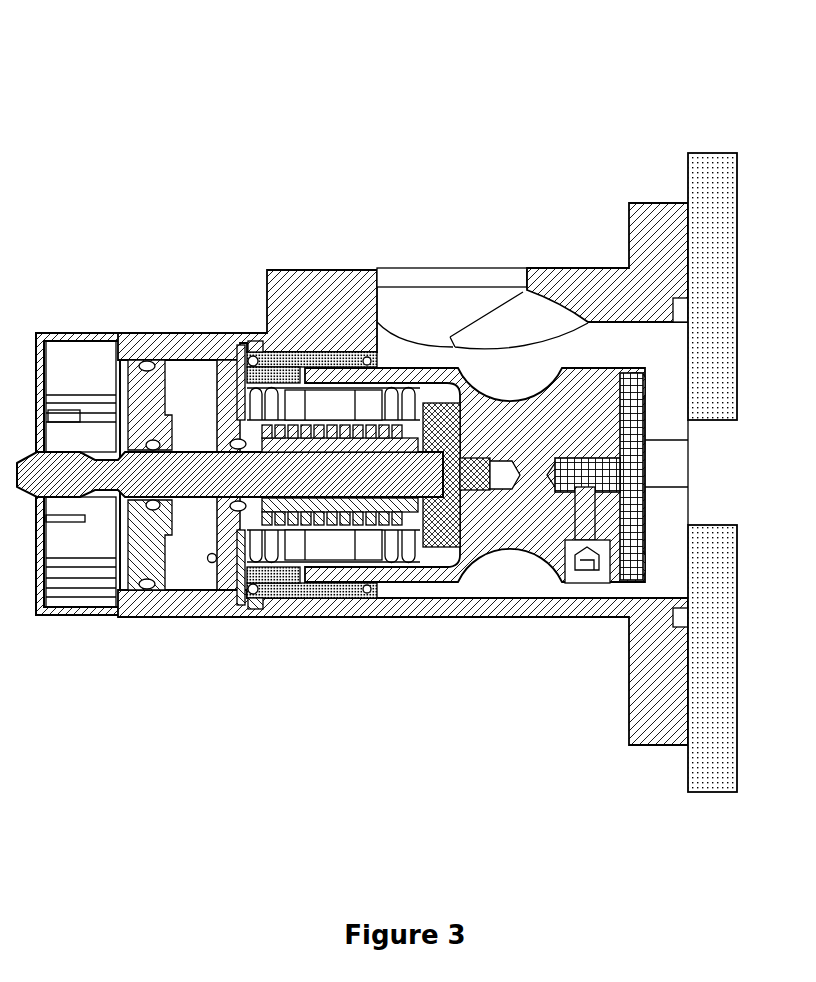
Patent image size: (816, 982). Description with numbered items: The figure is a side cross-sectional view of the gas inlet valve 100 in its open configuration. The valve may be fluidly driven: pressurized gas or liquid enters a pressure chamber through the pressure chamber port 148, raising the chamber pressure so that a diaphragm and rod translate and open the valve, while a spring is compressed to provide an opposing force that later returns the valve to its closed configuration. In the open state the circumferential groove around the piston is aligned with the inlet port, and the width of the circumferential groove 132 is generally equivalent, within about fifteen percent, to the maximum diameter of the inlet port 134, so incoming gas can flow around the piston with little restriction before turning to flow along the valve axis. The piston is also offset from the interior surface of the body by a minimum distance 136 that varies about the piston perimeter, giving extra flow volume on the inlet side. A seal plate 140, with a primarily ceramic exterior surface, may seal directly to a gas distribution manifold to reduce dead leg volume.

The gas inlet valve 100 is at (646, 78).
The seal plate 140 is at (705, 183).
The pressure chamber port 148 is at (212, 563).
The maximum diameter of the inlet port 134 is at (526, 255).
The width of the circumferential groove 132 is at (562, 355).
The minimum distance 136 is at (692, 322).